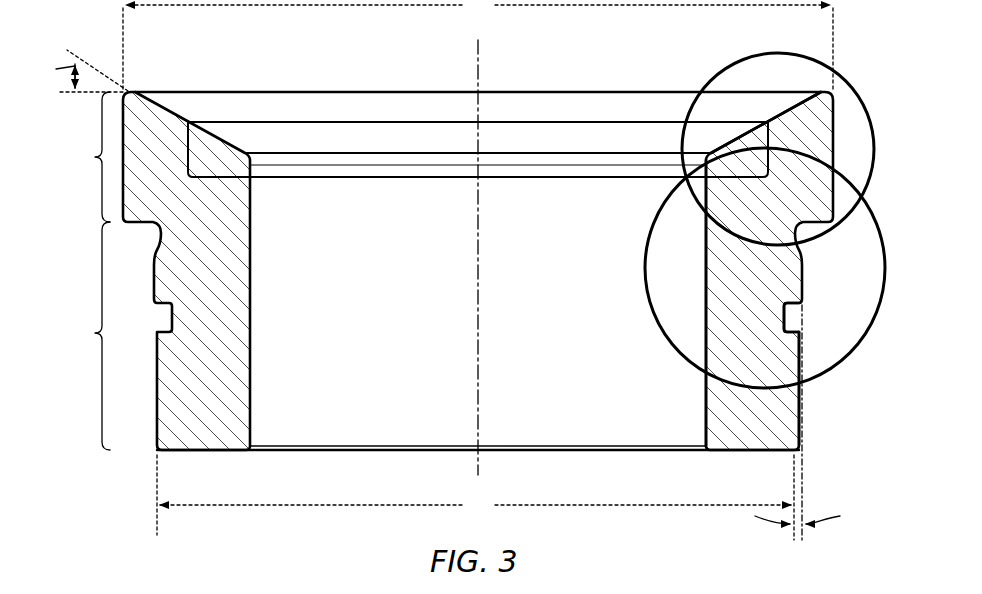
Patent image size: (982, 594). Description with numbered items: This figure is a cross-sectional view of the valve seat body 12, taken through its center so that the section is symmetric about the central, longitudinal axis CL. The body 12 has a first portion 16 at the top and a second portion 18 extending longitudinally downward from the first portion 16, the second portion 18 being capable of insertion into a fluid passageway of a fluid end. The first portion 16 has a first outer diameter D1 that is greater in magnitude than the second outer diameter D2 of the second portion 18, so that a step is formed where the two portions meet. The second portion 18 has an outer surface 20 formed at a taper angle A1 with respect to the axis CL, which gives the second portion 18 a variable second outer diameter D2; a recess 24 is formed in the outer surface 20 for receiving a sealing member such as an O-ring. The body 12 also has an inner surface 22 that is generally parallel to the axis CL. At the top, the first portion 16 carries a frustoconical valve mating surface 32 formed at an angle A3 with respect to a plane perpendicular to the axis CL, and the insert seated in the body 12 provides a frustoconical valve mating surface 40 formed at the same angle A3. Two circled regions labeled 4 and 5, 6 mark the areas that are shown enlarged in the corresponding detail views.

The detail view circle (FIG. 4) 4 is at (877, 214).
The detail view circle (FIG. 5) 5 is at (797, 145).
The detail view circle (FIG. 6) 6 is at (852, 89).
The body 12 is at (812, 398).
The first portion 16 is at (89, 157).
The second portion 18 is at (89, 336).
The outer surface 20 is at (800, 428).
The inner surface 22 is at (705, 423).
The recess 24 is at (806, 320).
The frustoconical valve mating surface 32 is at (757, 100).
The frustoconical valve mating surface 40 is at (572, 136).
The central longitudinal axis CL is at (480, 60).
The first outer diameter D1 is at (478, 46).
The second outer diameter D2 is at (475, 497).
The taper angle A1 is at (813, 422).
The angle A3 is at (80, 71).